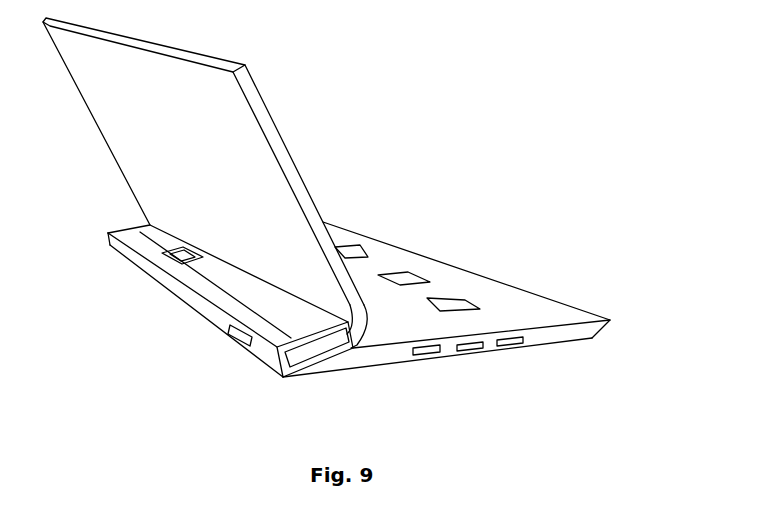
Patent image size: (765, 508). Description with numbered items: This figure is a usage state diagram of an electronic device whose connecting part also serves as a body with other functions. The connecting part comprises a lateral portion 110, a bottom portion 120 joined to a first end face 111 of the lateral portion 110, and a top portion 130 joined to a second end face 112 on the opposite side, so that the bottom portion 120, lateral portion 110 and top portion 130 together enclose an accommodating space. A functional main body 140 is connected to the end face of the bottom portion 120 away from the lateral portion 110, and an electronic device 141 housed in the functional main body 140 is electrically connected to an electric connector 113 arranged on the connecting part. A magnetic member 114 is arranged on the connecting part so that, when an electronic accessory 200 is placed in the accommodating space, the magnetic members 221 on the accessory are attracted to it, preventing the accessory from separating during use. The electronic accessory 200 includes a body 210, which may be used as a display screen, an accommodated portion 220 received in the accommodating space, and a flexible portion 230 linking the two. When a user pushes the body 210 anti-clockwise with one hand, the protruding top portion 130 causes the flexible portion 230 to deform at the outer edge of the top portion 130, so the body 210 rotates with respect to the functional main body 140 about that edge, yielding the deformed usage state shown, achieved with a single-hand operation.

The lateral portion 110 is at (200, 313).
The first end face 111 is at (283, 378).
The second end face 112 is at (260, 366).
The electric connector 113 is at (232, 338).
The magnetic member 114 is at (127, 230).
The bottom portion 120 is at (318, 374).
The top portion 130 is at (240, 283).
The functional main body 140 is at (466, 311).
The electronic device 141 is at (407, 278).
The electronic accessory 200 is at (271, 183).
The body 210 is at (300, 187).
The accommodated portion 220 is at (322, 222).
The magnetic member 221 is at (150, 224).
The flexible portion 230 is at (387, 270).